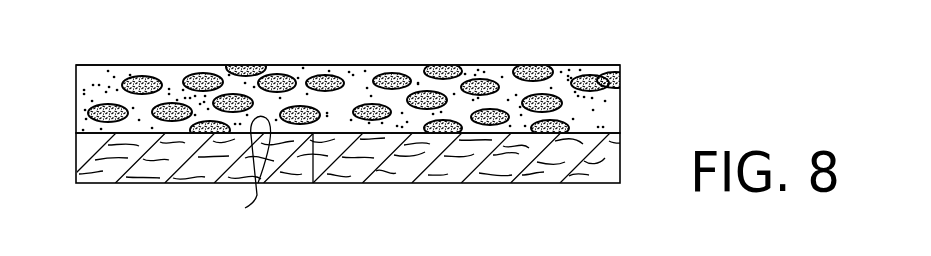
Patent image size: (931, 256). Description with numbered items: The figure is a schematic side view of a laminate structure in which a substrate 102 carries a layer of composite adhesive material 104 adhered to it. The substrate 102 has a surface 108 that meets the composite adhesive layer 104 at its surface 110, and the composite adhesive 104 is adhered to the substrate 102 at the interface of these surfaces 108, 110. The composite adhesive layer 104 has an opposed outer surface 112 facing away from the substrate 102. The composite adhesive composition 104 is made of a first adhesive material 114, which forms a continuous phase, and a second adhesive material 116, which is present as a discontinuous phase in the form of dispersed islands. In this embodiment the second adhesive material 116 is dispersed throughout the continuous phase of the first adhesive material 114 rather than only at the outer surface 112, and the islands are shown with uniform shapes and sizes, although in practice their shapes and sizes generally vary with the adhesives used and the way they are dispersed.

The substrate 102 is at (329, 172).
The composite adhesive layer 104 is at (330, 75).
The substrate surface 108 is at (237, 172).
The composite adhesive layer surface 110 is at (313, 183).
The composite adhesive layer surface 112 is at (357, 65).
The first adhesive material 114 is at (102, 75).
The second adhesive material 116 is at (290, 75).